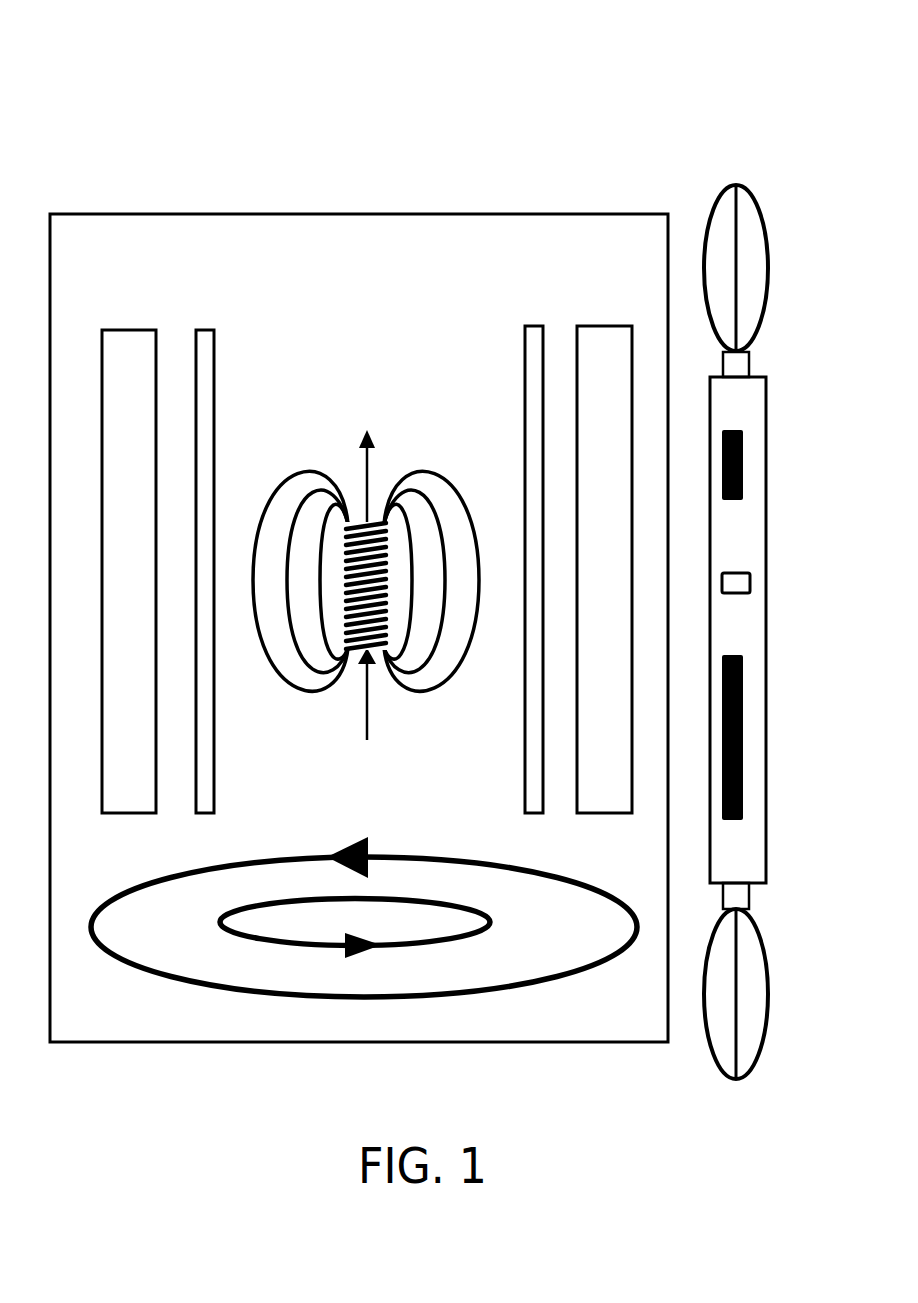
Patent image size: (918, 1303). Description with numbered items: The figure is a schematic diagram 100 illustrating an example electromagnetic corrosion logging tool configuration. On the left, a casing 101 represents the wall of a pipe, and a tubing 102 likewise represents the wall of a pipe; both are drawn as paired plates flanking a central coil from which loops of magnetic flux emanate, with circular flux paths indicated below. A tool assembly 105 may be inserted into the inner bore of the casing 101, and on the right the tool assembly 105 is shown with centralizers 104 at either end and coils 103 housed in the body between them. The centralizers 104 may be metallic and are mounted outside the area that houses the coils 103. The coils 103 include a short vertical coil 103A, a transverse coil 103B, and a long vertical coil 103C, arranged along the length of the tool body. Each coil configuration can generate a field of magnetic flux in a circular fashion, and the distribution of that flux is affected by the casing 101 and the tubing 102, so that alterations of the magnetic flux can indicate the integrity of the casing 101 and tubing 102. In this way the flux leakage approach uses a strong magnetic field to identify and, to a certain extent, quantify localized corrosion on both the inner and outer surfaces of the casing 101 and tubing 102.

The schematic diagram 100 is at (146, 112).
The casing 101 is at (123, 330).
The tubing 102 is at (216, 400).
The coils 103 is at (370, 693).
The short vertical coil 103A is at (743, 462).
The transverse coil 103B is at (750, 580).
The long vertical coil 103C is at (743, 752).
The centralizers 104 is at (787, 288).
The tool assembly 105 is at (770, 210).